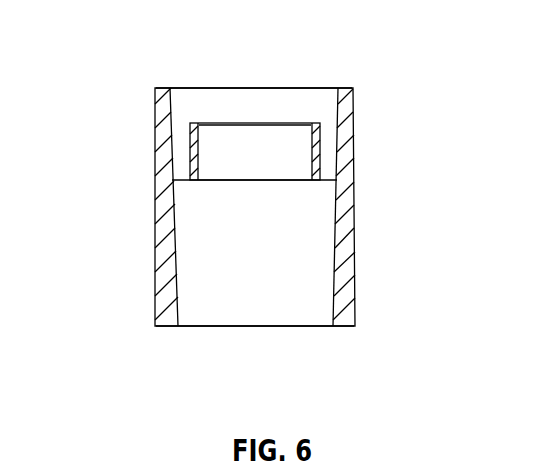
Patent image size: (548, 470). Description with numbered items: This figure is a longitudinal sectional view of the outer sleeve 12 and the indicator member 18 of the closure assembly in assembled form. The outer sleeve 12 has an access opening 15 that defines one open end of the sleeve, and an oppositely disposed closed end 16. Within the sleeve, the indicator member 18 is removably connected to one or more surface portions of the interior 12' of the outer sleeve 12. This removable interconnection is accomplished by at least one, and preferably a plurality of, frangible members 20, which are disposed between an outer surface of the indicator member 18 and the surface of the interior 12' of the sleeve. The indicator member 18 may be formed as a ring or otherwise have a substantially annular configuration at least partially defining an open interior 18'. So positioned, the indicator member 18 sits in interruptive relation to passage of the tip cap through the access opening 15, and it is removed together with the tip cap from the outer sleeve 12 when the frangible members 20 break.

The outer sleeve 12 is at (281, 207).
The interior of the outer sleeve 12' is at (375, 207).
The access opening 15 is at (298, 88).
The closed end 16 is at (306, 326).
The indicator member 18 is at (201, 151).
The open interior 18' is at (255, 86).
The frangible members 20 is at (325, 181).